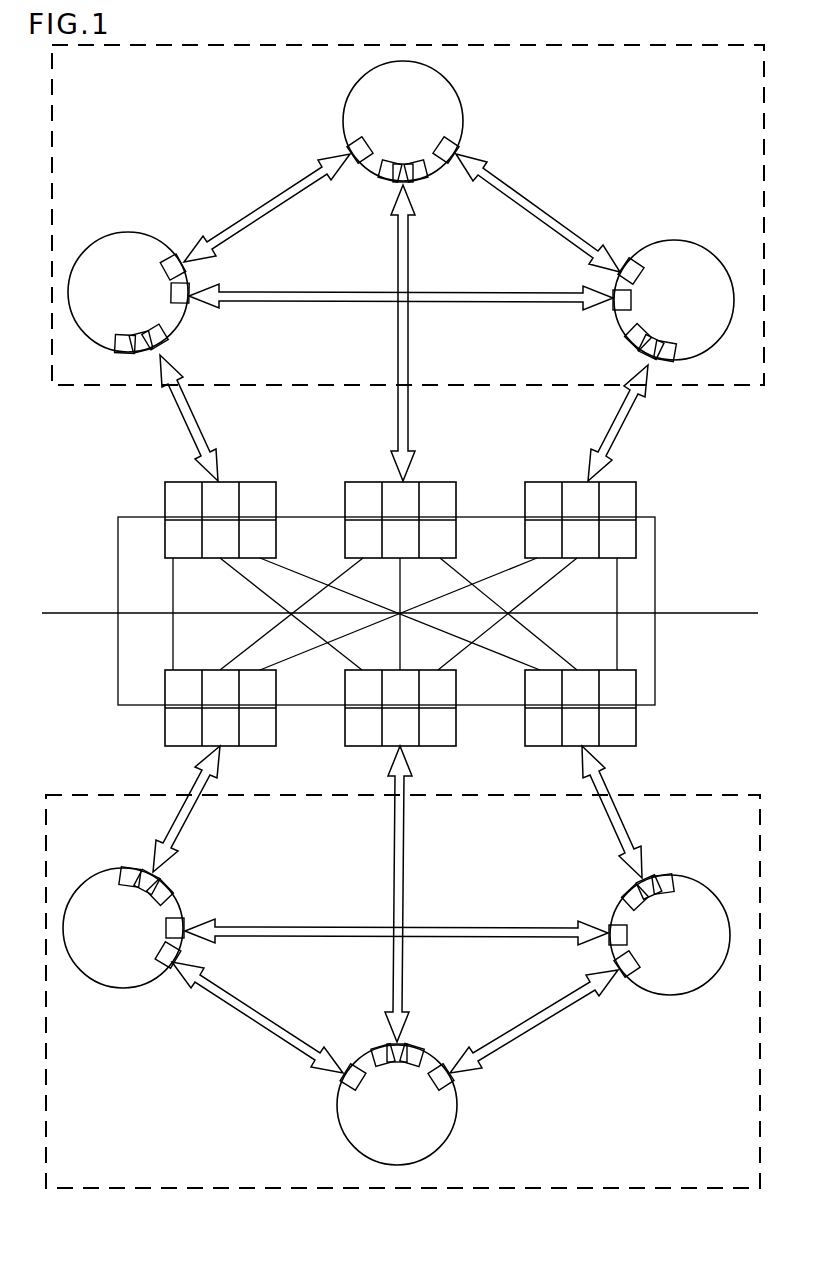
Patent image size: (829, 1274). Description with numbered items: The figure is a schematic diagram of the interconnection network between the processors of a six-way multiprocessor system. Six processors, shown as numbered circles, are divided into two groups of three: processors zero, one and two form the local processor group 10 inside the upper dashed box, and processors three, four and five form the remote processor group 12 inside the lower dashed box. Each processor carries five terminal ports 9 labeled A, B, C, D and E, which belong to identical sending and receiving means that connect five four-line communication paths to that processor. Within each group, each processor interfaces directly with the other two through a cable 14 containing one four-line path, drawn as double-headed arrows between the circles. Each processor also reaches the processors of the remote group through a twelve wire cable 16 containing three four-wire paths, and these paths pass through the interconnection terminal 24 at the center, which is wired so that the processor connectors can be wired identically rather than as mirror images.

The terminal port 9 is at (160, 340).
The local processor group 10 is at (107, 385).
The remote processor group 12 is at (117, 795).
The cable 14 is at (258, 217).
The twelve wire cable 16 is at (397, 420).
The interconnection terminal 24 is at (118, 543).